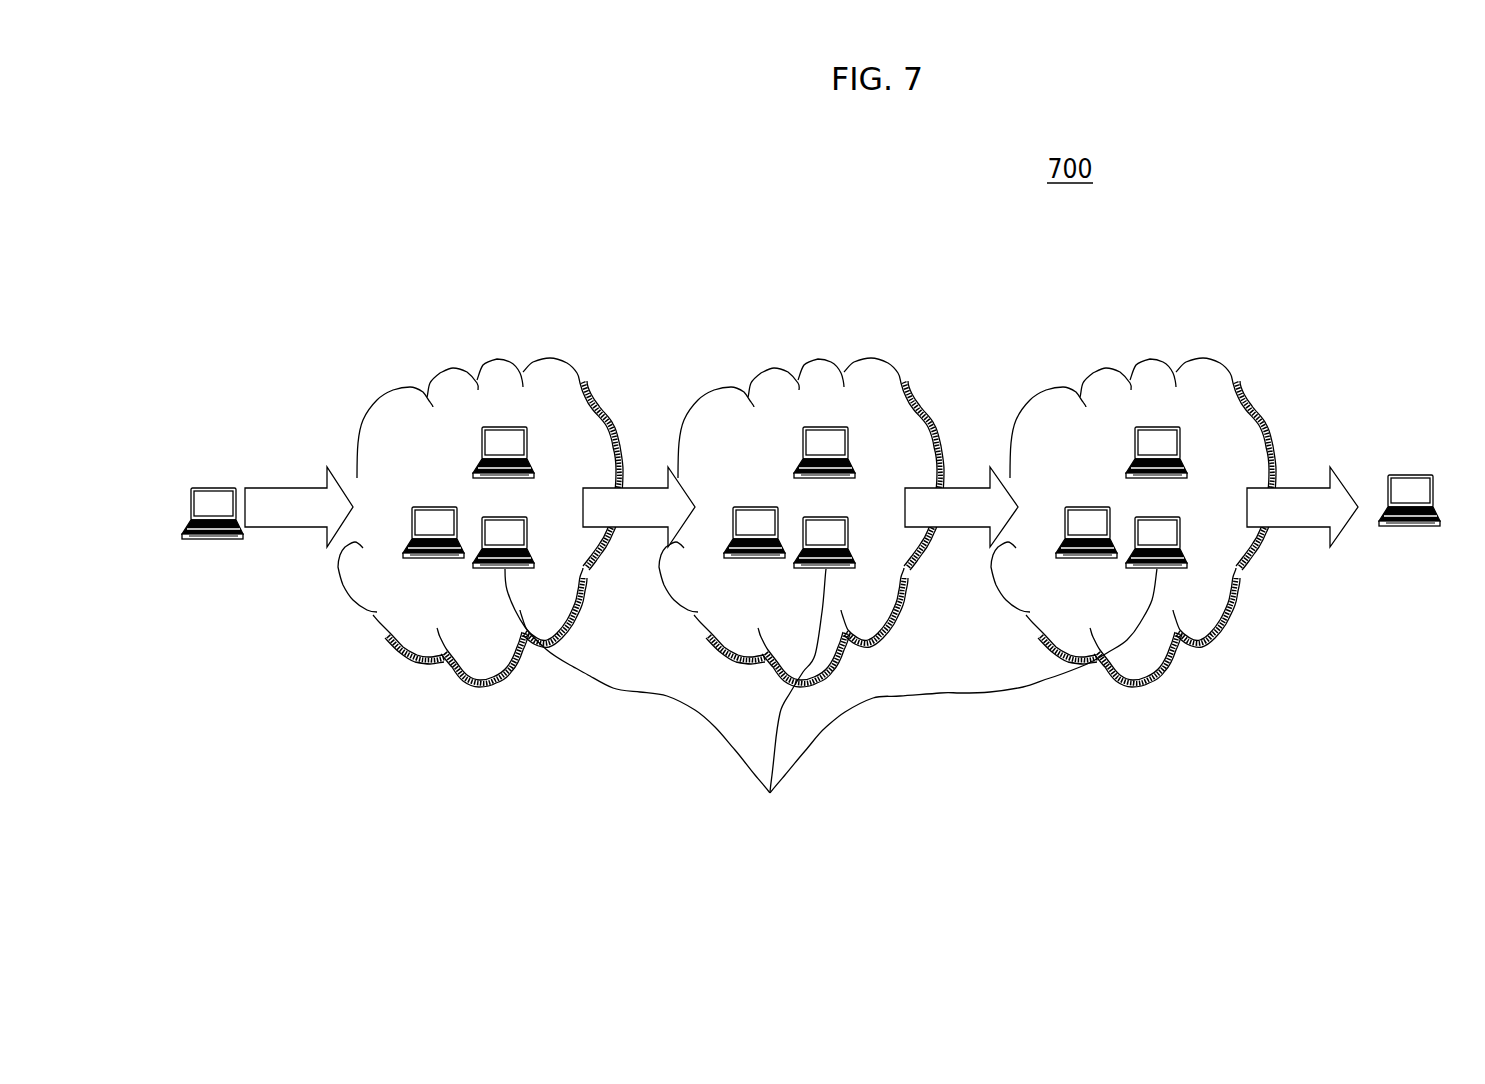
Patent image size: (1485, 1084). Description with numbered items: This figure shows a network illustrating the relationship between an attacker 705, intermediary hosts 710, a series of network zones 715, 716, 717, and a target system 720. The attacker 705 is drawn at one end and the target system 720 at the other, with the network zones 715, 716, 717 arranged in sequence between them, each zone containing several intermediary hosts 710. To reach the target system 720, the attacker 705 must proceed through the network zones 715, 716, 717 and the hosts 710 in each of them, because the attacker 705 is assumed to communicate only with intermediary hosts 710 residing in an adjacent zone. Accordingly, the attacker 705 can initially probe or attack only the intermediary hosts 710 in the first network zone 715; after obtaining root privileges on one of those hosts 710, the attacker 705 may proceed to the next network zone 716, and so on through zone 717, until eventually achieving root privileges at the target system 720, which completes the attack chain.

The attacker 705 is at (213, 488).
The intermediary hosts 710 is at (770, 793).
The first network zone 715 is at (477, 373).
The next network zone 716 is at (801, 489).
The network zone 717 is at (1133, 489).
The target system 720 is at (1408, 475).